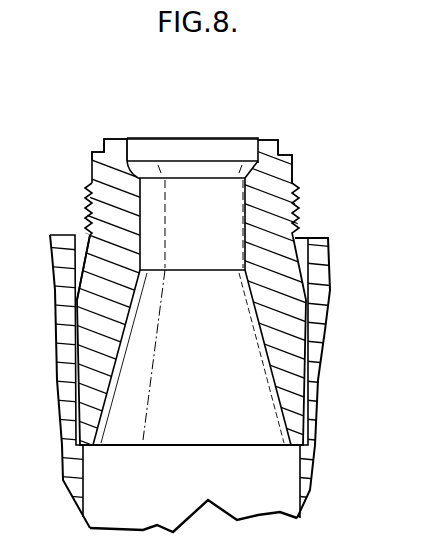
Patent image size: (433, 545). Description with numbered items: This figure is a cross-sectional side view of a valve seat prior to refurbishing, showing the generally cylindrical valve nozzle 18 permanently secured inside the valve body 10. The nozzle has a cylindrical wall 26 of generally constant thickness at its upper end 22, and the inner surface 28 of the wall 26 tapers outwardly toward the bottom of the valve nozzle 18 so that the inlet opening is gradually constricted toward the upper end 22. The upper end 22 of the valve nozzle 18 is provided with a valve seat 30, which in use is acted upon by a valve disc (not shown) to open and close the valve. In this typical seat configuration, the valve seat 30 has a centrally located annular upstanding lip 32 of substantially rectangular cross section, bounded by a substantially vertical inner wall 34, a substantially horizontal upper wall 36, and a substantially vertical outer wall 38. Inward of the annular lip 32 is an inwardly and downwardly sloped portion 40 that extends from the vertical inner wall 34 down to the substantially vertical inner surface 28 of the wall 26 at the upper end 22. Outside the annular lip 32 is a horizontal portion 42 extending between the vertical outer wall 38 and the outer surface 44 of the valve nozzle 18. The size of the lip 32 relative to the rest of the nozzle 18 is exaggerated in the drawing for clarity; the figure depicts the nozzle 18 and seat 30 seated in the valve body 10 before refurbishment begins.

The valve body 10 is at (331, 318).
The valve nozzle 18 is at (295, 208).
The upper end 22 is at (297, 183).
The cylindrical wall 26 is at (112, 250).
The inner surface 28 is at (248, 174).
The valve seat 30 is at (278, 152).
The annular upstanding lip 32 is at (118, 137).
The vertical inner wall 34 is at (138, 151).
The horizontal upper wall 36 is at (104, 133).
The vertical outer wall 38 is at (104, 147).
The inwardly and downwardly sloped portion 40 is at (140, 172).
The horizontal portion 42 is at (290, 153).
The outer surface 44 is at (92, 173).